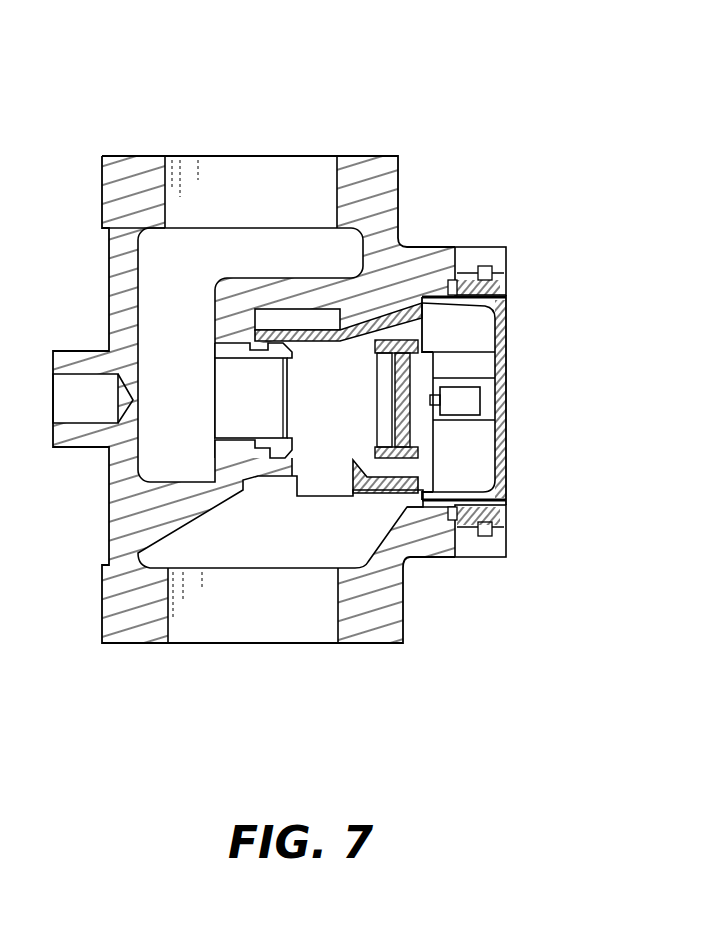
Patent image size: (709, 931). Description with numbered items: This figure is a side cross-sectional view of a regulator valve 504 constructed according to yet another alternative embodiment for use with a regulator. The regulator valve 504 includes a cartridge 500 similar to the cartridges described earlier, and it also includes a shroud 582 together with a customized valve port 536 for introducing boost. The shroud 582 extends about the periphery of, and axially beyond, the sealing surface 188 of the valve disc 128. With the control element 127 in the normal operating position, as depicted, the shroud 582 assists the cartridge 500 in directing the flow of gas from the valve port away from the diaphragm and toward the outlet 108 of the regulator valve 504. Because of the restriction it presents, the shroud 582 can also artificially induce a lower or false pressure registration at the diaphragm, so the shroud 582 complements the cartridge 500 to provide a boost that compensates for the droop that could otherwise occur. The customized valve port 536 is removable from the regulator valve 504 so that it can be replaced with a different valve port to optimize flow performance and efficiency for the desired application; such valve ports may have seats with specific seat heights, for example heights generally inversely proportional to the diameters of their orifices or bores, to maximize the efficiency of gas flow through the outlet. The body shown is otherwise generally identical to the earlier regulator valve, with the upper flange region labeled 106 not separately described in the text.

The regulator valve 504 is at (387, 142).
The upper flange 106 is at (168, 187).
The outlet 108 is at (263, 613).
The cartridge 500 is at (326, 311).
The customized valve port 536 is at (230, 387).
The sealing surface 188 is at (377, 388).
The control element 127 is at (386, 478).
The shroud 582 is at (424, 347).
The valve disc 128 is at (443, 361).